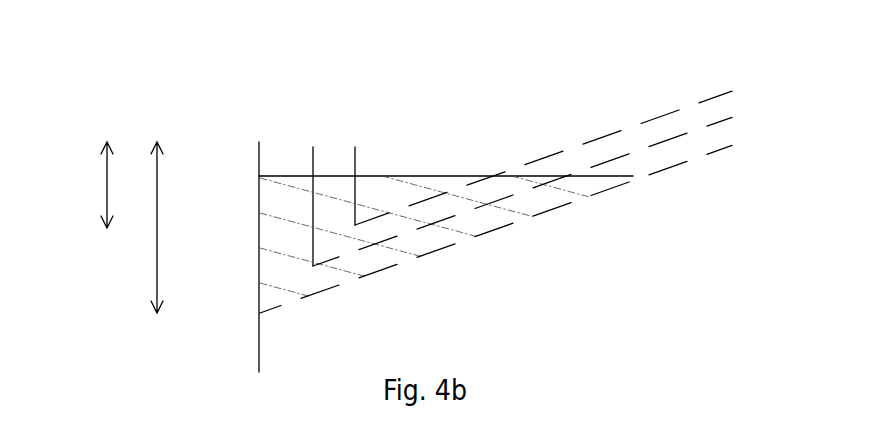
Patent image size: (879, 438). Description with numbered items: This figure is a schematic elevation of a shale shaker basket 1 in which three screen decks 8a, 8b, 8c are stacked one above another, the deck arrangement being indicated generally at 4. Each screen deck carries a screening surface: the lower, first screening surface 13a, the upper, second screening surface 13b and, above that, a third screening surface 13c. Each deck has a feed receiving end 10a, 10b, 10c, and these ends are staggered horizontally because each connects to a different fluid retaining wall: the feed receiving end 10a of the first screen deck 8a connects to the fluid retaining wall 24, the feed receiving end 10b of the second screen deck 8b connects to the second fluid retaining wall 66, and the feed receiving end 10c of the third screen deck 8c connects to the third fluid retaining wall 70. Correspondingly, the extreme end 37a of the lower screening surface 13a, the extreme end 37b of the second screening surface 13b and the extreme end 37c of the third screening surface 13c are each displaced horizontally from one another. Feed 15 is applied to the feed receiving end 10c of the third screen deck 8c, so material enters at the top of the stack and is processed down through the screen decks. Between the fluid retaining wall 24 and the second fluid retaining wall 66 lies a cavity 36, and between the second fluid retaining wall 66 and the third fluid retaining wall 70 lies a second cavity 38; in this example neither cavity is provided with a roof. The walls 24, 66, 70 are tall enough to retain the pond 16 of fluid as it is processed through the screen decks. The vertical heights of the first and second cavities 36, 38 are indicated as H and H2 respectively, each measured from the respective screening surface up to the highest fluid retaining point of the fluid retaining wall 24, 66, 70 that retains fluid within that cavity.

The device 1 is at (477, 67).
The base body 4 is at (227, 154).
The first screen deck 8a is at (722, 149).
The second screen deck 8b is at (720, 121).
The third screen deck 8c is at (716, 95).
The feed receiving end of first screen deck 10a is at (279, 312).
The feed receiving end of second screen deck 10b is at (338, 258).
The feed receiving end of third screen deck 10c is at (389, 213).
The first screening surface 13a is at (672, 166).
The second screening surface 13b is at (627, 152).
The third rear edge 13c is at (657, 116).
The feed 15 is at (399, 141).
The pond 16 is at (428, 188).
The fluid retaining wall 24 is at (258, 262).
The cavity 36 is at (288, 203).
The extreme end of first screening surface 37a is at (278, 307).
The extreme end of second screening surface 37b is at (314, 266).
The third step front end 37c is at (357, 225).
The second cavity 38 is at (331, 187).
The second fluid retaining wall 66 is at (313, 165).
The third fluid retaining wall 70 is at (354, 163).
The vertical height of first cavity H is at (149, 227).
The vertical height of second cavity H2 is at (91, 185).